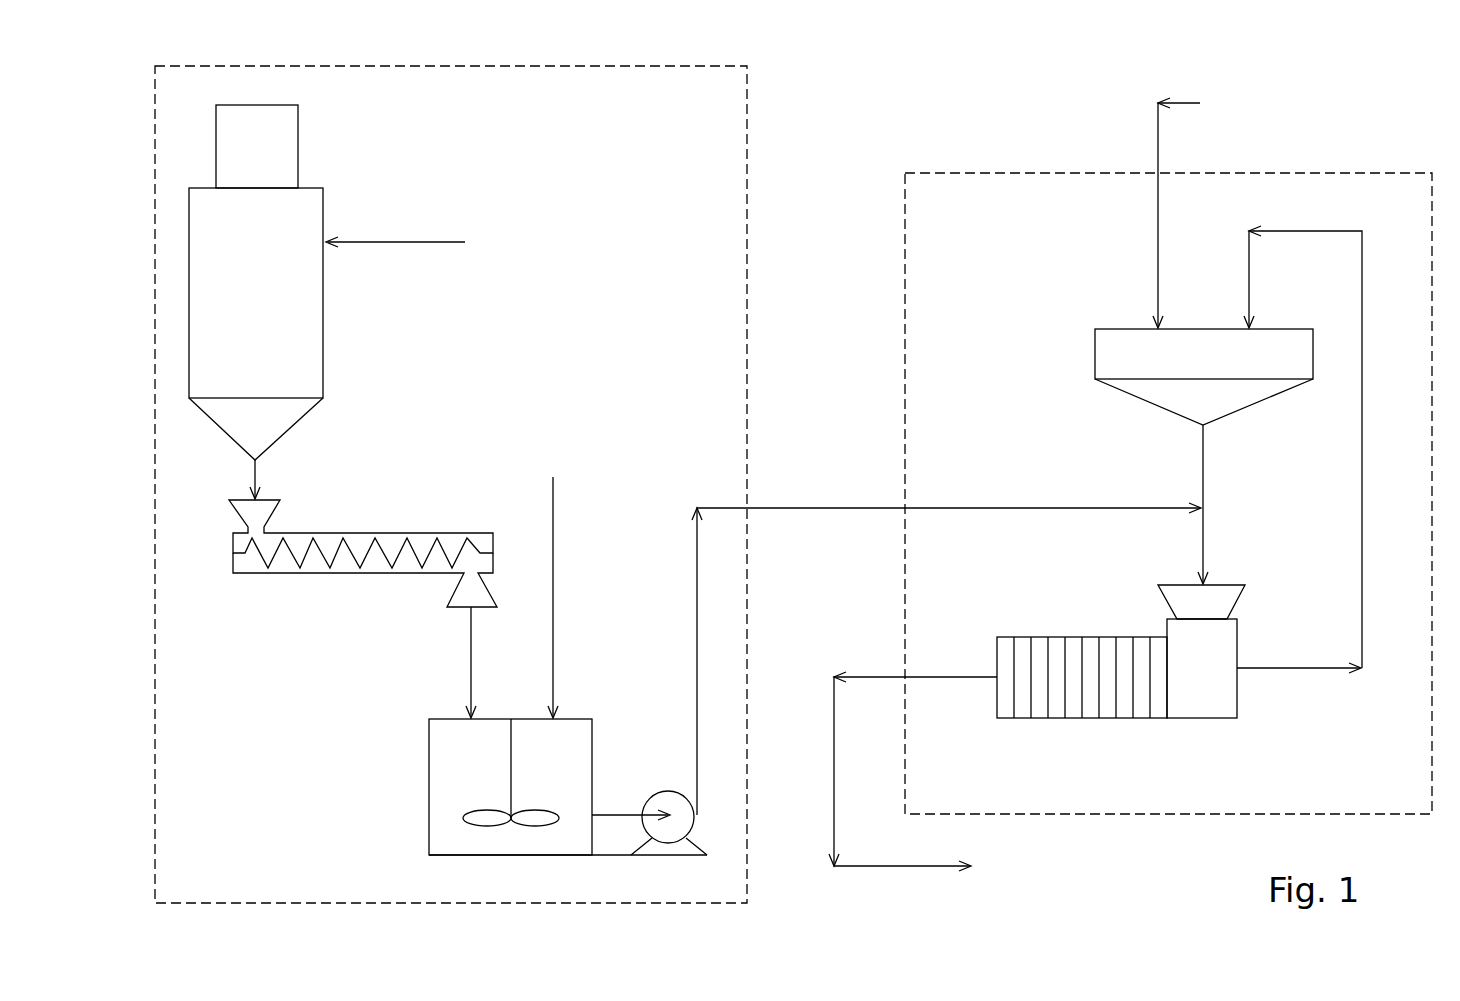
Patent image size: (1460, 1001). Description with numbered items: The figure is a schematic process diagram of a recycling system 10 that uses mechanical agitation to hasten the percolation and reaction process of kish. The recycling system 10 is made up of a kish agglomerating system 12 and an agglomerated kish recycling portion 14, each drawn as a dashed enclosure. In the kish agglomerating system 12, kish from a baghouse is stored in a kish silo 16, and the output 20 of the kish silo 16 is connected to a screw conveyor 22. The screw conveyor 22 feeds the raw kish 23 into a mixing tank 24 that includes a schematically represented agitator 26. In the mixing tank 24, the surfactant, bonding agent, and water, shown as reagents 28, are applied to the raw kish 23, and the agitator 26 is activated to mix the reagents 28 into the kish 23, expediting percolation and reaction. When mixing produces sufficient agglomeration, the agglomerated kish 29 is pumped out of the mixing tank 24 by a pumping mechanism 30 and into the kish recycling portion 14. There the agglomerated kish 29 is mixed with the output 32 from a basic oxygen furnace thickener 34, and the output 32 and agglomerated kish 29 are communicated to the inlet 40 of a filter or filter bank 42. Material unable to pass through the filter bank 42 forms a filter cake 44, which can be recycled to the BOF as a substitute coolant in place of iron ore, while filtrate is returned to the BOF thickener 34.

The recycling system 10 is at (884, 118).
The kish agglomerating system 12 is at (728, 117).
The agglomerated kish recycling portion 14 is at (1010, 185).
The kish silo 16 is at (318, 305).
The output 20 is at (258, 463).
The screw conveyor 22 is at (345, 533).
The raw kish 23 is at (470, 655).
The mixing tank 24 is at (435, 830).
The agitator 26 is at (468, 811).
The reagents 28 is at (554, 640).
The agglomerated kish 29 is at (828, 508).
The pumping mechanism 30 is at (645, 792).
The output 32 is at (1200, 460).
The BOF thickener 34 is at (1250, 408).
The inlet 40 is at (1217, 578).
The filter bank 42 is at (1128, 616).
The filter cake 44 is at (832, 760).